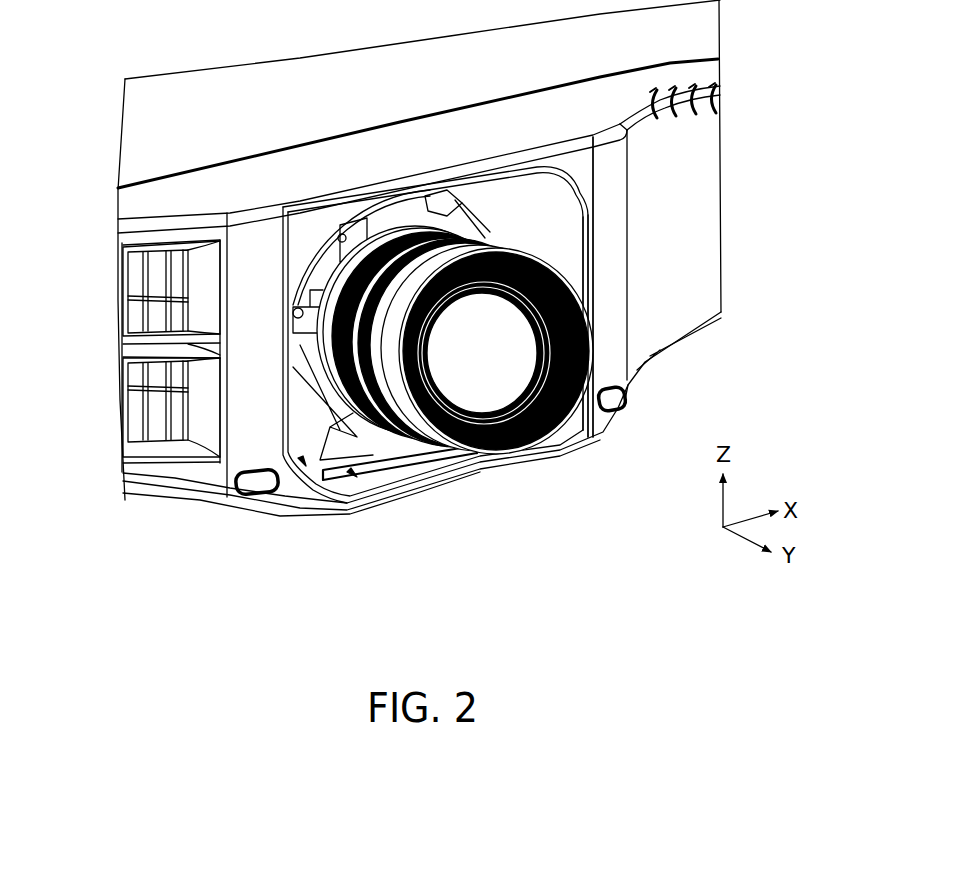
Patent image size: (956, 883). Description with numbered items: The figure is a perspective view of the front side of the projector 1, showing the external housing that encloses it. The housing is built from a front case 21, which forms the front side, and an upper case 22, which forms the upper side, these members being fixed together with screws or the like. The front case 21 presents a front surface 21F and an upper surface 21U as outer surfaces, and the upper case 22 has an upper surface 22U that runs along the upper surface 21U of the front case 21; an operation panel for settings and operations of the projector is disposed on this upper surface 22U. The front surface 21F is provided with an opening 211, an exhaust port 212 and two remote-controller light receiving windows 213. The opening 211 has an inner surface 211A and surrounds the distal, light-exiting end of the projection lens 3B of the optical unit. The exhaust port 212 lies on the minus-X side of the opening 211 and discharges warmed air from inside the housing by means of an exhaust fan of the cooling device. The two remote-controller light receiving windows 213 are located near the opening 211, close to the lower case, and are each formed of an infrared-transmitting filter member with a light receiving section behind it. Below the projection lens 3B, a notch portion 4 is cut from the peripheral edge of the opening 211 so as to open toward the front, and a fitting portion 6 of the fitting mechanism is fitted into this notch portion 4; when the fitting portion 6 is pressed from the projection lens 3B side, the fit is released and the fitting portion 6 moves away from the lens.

The projector 1 is at (424, 299).
The upper case 22 is at (424, 250).
The upper surface of the upper case 22U is at (695, 33).
The front case 21 is at (457, 330).
The upper surface of the front case 21U is at (697, 72).
The front surface of the front case 21F is at (693, 212).
The opening 211 is at (305, 490).
The inner surface of the opening 211A is at (333, 482).
The exhaust port 212 is at (163, 428).
The remote-controller light receiving window 213 is at (257, 480).
The projection lens 3B is at (482, 387).
The notch portion 4 is at (378, 493).
The fitting portion 6 is at (398, 462).